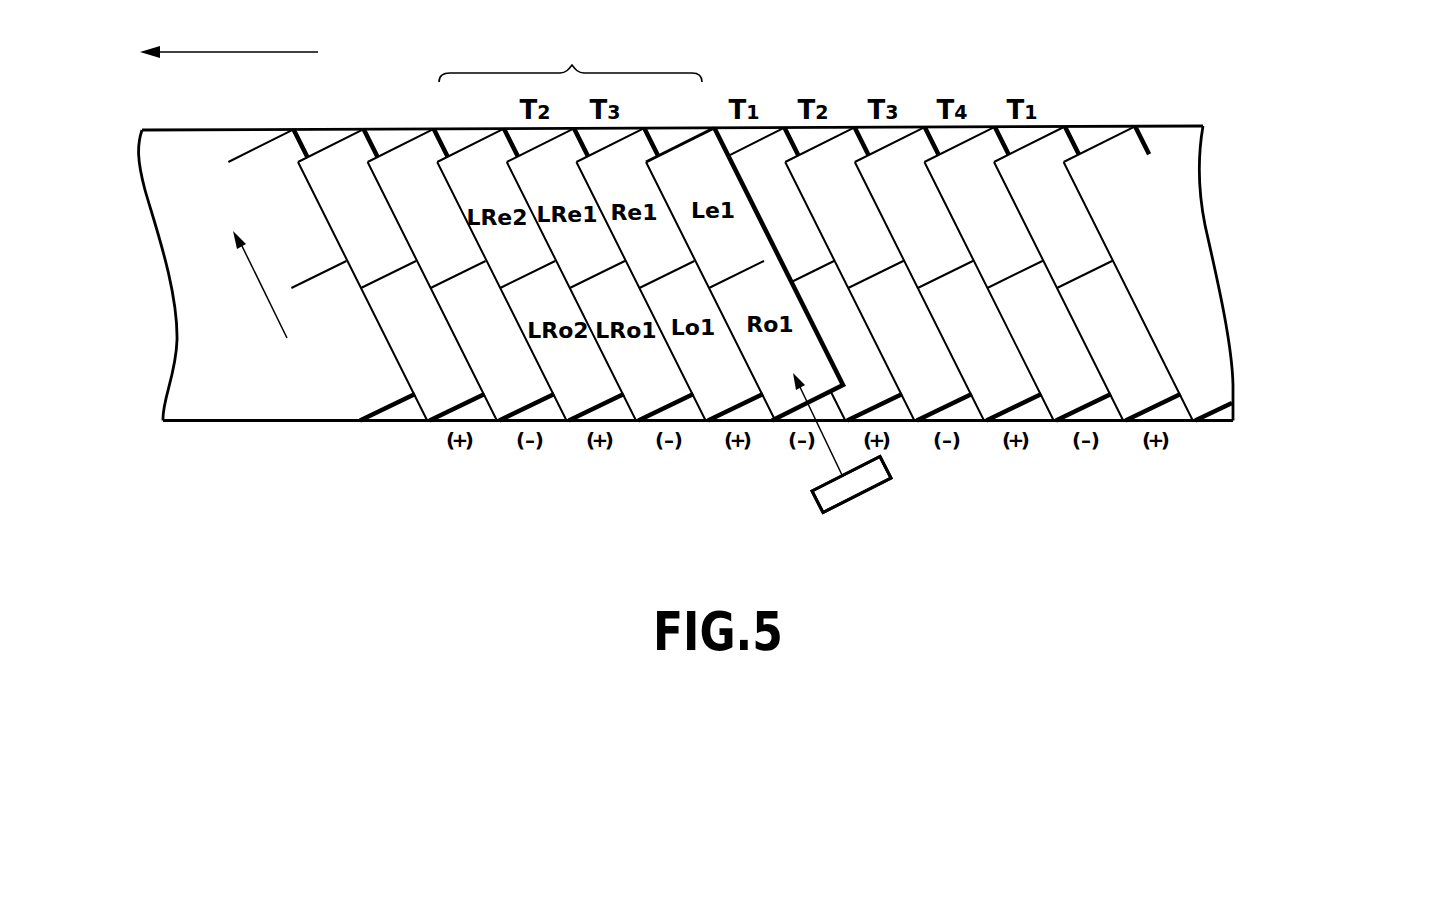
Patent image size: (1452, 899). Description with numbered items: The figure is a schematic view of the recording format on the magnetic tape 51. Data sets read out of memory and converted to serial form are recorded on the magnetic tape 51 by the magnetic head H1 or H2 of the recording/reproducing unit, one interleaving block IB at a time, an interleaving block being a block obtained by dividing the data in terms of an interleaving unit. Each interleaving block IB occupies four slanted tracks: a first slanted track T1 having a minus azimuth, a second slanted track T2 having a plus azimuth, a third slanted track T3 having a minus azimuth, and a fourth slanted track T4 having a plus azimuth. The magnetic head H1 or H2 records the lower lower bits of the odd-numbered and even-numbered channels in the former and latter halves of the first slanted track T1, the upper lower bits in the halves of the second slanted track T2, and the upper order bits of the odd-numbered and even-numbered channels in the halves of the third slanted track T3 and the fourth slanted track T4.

The magnetic tape 51 is at (1201, 201).
The interleaving block IB is at (574, 55).
The first slanted track T1 is at (501, 258).
The second slanted track T2 is at (432, 258).
The third slanted track T3 is at (362, 258).
The fourth slanted track T4 is at (744, 258).
The magnetic head H1 is at (875, 482).
The magnetic head H2 is at (898, 505).